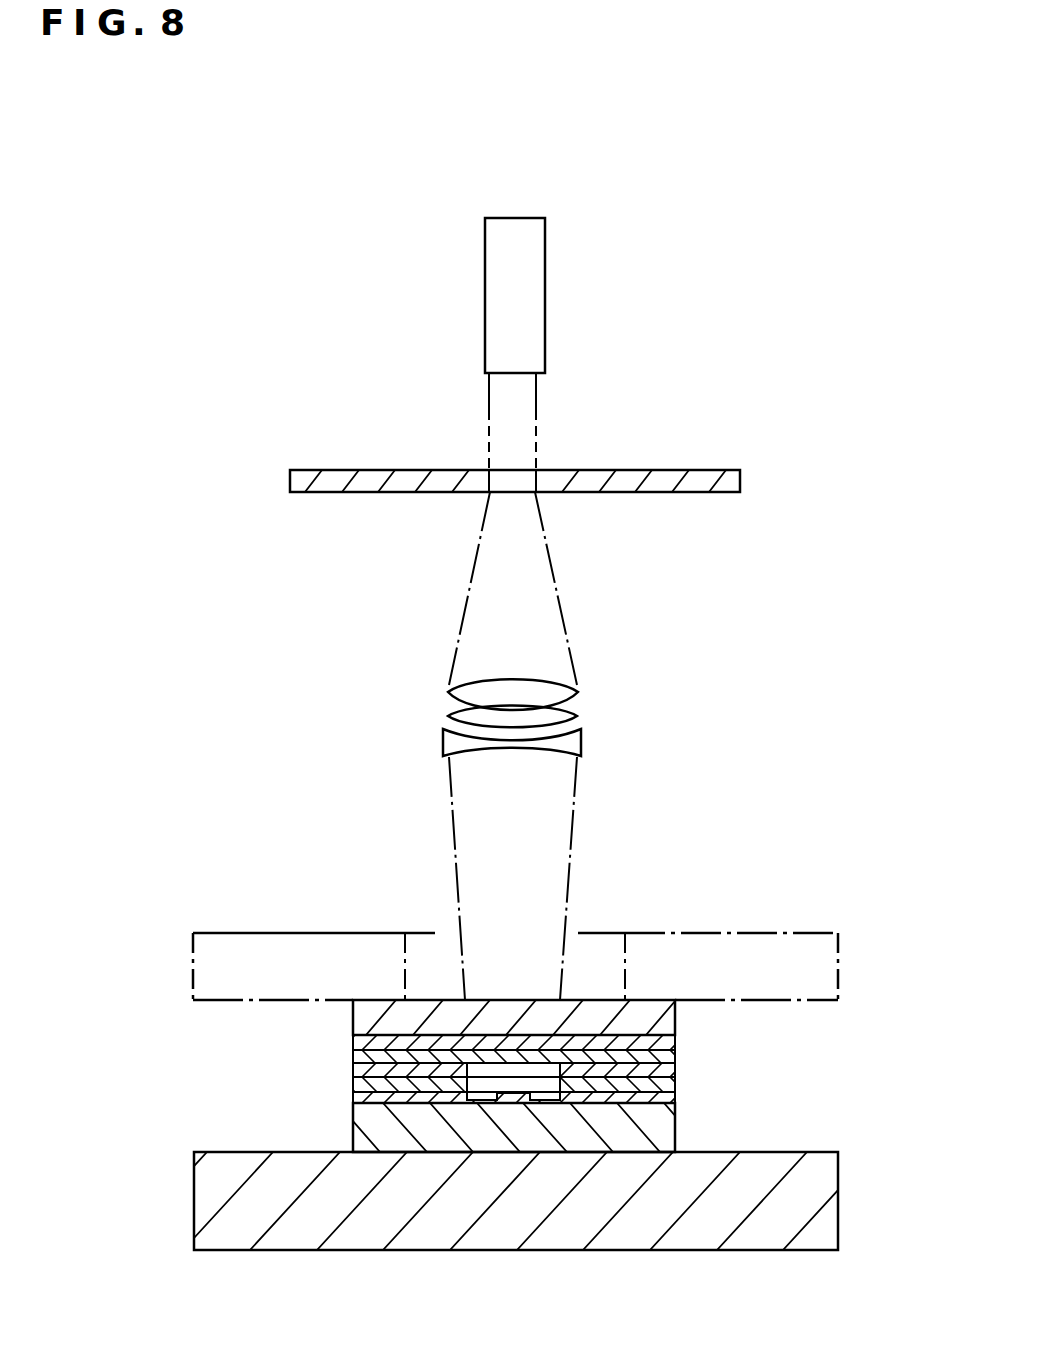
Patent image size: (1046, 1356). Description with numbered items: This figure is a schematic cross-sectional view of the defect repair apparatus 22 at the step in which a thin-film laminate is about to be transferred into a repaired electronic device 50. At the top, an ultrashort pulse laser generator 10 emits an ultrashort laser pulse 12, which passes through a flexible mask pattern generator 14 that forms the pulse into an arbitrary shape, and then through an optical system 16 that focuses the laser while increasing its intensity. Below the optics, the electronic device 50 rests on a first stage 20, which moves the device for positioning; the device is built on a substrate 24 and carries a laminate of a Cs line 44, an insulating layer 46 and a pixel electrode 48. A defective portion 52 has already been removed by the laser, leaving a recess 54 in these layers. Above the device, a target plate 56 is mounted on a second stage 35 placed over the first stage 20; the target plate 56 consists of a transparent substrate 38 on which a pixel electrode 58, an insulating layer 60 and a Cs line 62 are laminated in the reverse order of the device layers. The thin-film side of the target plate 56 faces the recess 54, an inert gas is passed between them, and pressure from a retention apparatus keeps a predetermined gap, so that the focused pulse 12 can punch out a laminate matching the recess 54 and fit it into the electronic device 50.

The ultrashort pulse laser generator 10 is at (530, 297).
The ultrashort laser pulse 12 is at (525, 405).
The flexible mask pattern generator 14 is at (692, 482).
The optical system 16 is at (612, 722).
The first stage 20 is at (799, 1148).
The defect repair apparatus 22 is at (722, 350).
The substrate 24 is at (655, 1132).
The second stage 35 is at (690, 928).
The transparent substrate 38 is at (366, 1018).
The Cs line 44 is at (676, 1100).
The insulating layer 46 is at (668, 1085).
The pixel electrode 48 is at (680, 1065).
The electronic device 50 is at (700, 1072).
The defective portion 52 is at (514, 1088).
The recess 54 is at (473, 1072).
The target plate 56 is at (702, 980).
The pixel electrode 58 is at (354, 1042).
The insulating layer 60 is at (355, 1056).
The Cs line 62 is at (356, 1069).